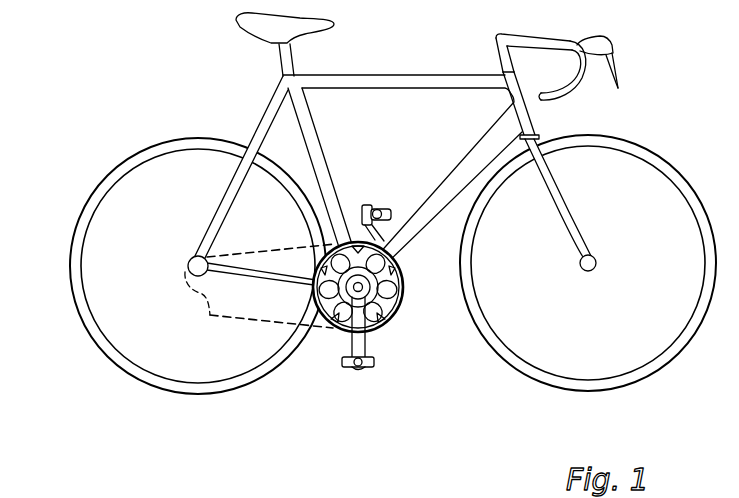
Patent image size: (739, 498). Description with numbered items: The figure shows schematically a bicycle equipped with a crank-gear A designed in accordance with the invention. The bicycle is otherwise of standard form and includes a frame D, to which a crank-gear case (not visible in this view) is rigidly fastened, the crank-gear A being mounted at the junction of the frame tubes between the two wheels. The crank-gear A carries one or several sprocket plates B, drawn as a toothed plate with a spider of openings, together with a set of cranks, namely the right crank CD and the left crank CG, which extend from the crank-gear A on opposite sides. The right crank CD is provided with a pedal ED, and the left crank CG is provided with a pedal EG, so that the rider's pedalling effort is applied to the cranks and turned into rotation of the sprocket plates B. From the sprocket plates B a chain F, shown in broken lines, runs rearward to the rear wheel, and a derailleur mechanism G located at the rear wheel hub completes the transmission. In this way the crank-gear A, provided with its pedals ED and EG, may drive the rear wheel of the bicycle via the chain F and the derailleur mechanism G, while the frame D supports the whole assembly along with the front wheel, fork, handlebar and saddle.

The crank-gear A is at (388, 336).
The sprocket plate B is at (408, 287).
The right crank CD is at (360, 345).
The pedal ED is at (347, 368).
The frame D is at (463, 157).
The left crank CG is at (360, 215).
The pedal EG is at (390, 213).
The chain F is at (250, 320).
The derailleur mechanism G is at (200, 292).